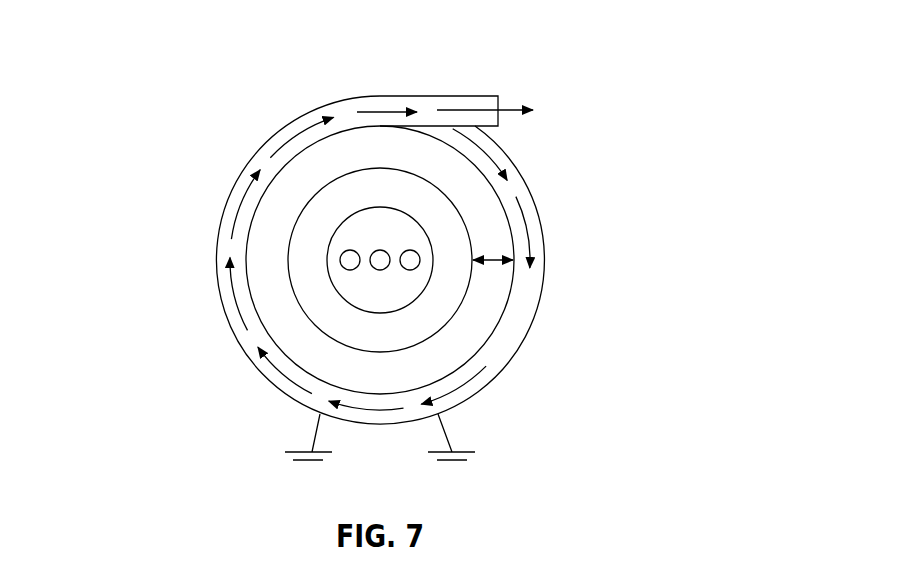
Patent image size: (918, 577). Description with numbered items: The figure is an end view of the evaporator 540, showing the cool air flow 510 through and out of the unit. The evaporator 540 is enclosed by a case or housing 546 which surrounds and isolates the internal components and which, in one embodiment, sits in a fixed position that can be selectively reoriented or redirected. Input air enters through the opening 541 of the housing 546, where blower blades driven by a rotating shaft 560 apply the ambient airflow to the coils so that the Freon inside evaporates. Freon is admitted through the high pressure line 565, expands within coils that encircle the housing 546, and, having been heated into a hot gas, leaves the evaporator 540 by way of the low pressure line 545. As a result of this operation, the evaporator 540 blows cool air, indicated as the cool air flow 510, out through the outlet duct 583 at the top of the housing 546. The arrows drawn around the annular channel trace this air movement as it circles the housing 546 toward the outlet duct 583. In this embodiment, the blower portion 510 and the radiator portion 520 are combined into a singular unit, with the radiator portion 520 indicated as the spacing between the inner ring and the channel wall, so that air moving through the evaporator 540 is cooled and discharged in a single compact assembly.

The evaporator 540 is at (190, 74).
The outlet duct 583 is at (507, 108).
The opening 541 is at (360, 228).
The cool air flow 510 is at (512, 187).
The radiator portion 520 is at (495, 265).
The high pressure line 565 is at (350, 260).
The low pressure line 545 is at (410, 260).
The shaft 560 is at (380, 260).
The housing 546 is at (288, 395).